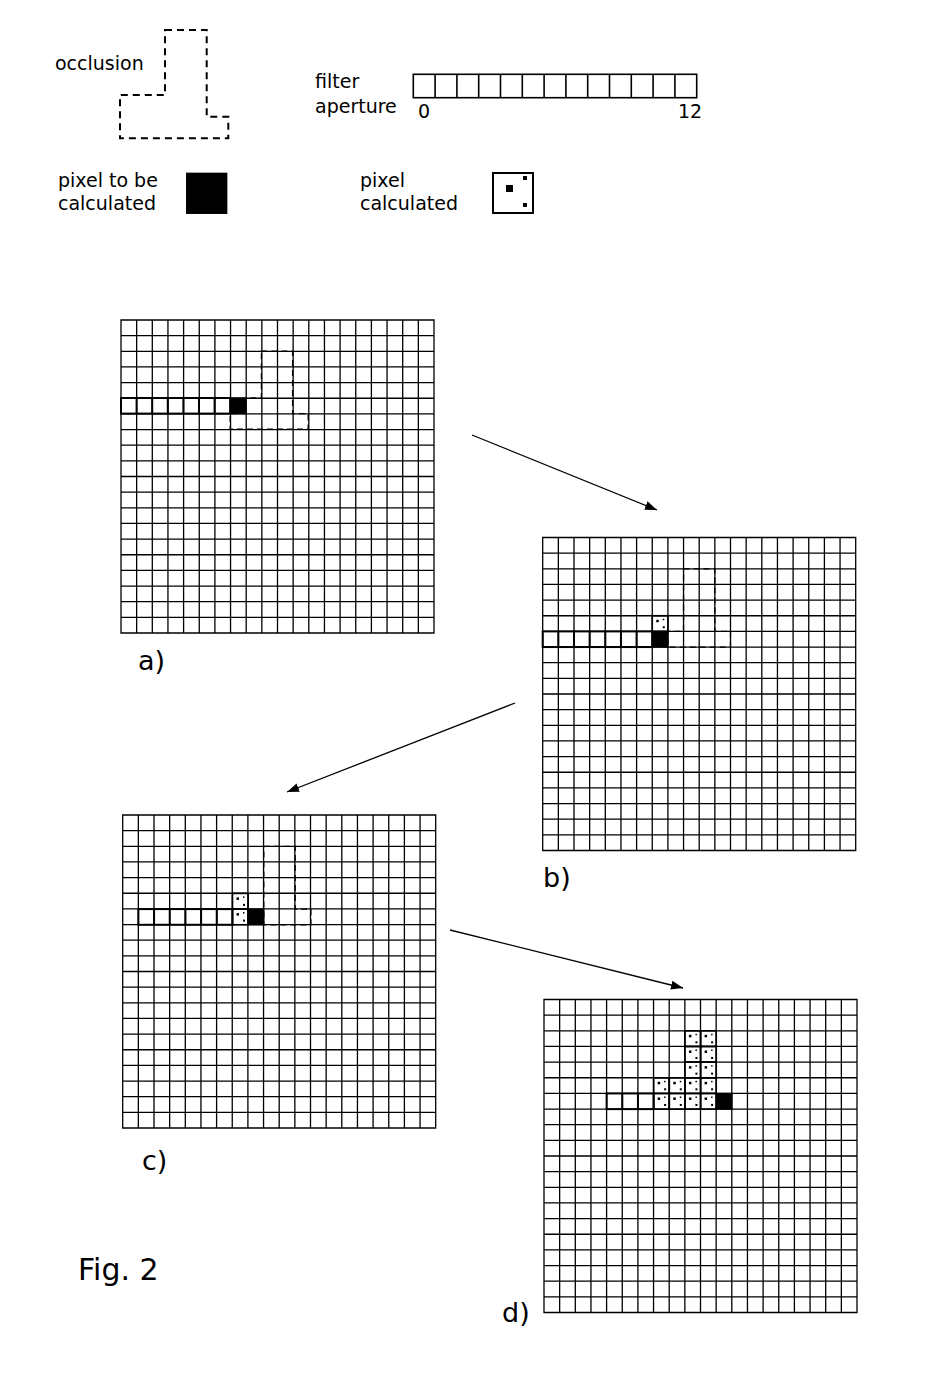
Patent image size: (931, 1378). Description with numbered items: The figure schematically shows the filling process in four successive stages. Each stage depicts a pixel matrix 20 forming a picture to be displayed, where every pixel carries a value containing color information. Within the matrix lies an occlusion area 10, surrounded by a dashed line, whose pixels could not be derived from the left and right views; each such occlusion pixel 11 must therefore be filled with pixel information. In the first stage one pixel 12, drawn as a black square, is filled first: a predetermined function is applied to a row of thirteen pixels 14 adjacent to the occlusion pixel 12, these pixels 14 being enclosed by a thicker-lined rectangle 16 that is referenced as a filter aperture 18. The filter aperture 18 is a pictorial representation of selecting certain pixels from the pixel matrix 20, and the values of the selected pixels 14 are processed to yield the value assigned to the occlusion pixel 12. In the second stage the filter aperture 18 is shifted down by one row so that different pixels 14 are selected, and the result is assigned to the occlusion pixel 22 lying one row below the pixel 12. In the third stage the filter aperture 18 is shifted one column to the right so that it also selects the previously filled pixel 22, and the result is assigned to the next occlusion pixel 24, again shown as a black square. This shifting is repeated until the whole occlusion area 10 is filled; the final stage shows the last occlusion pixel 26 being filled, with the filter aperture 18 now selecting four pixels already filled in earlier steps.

The occlusion area 10 is at (293, 355).
The occlusion pixel 11 is at (266, 355).
The occlusion pixel 12 is at (233, 399).
The pixels 14 is at (123, 412).
The rectangle 16 is at (130, 398).
The filter aperture 18 is at (653, 74).
The pixel matrix 20 is at (447, 366).
The occlusion pixel 22 is at (651, 631).
The occlusion pixel 24 is at (253, 924).
The occlusion pixel 26 is at (732, 1097).